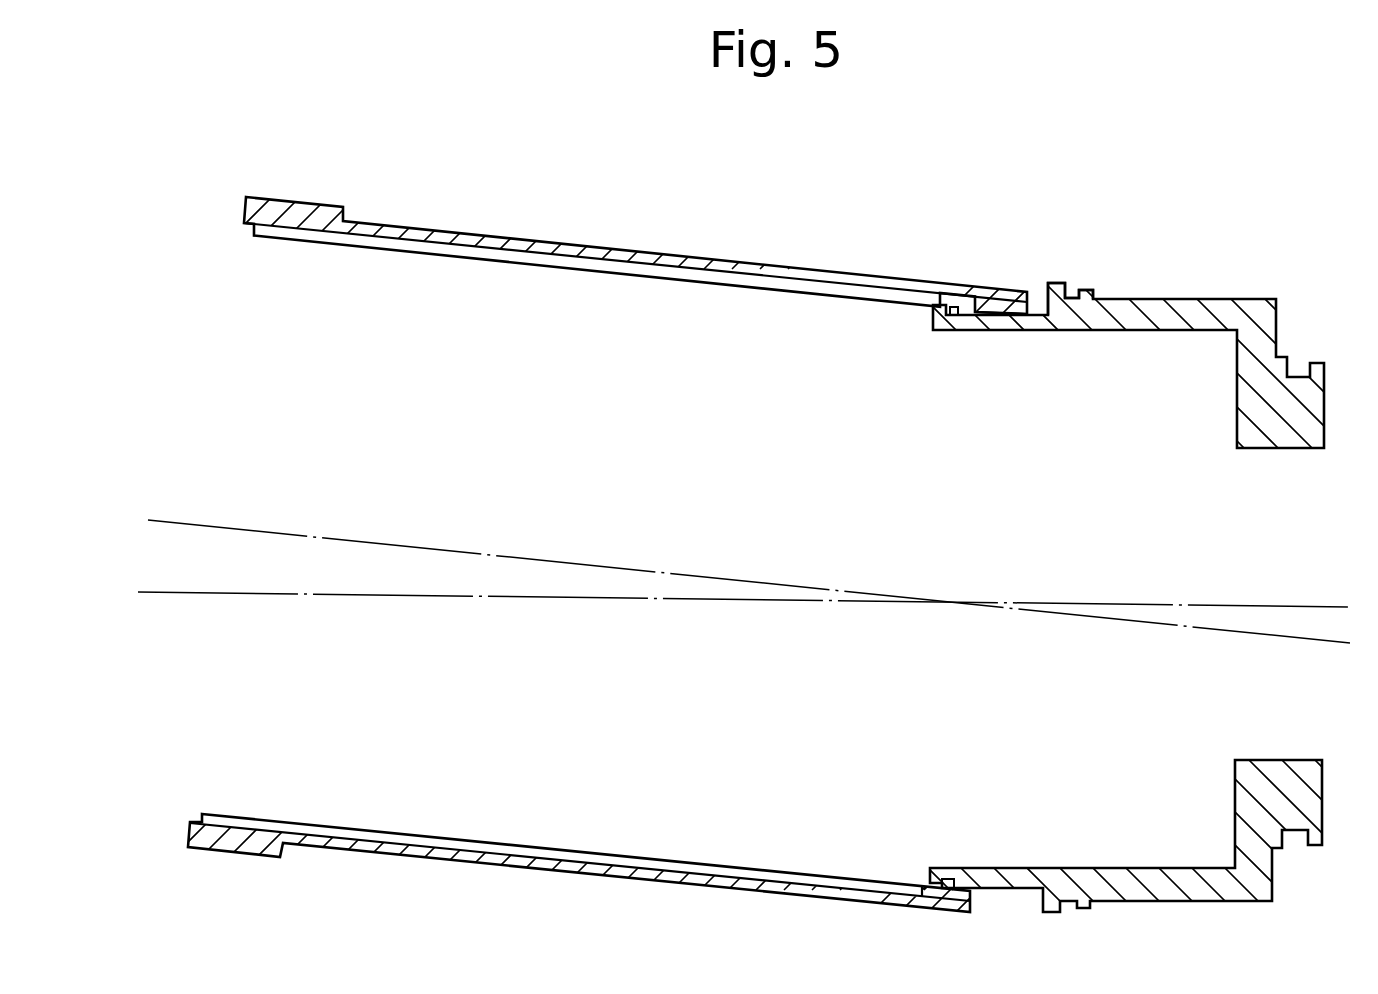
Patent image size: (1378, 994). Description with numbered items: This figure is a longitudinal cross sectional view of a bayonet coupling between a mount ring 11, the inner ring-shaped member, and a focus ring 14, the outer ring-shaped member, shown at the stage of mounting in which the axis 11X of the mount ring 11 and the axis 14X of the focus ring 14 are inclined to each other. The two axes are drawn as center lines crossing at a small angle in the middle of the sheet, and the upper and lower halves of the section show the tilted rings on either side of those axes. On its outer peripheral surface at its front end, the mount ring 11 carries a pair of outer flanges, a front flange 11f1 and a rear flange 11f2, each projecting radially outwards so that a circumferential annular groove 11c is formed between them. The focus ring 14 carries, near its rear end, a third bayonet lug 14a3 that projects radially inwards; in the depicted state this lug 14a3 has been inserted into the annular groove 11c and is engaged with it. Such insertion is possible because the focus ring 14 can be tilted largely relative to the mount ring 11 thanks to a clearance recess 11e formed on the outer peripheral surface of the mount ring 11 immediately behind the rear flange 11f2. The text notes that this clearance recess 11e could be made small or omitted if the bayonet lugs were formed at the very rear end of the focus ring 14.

The focus ring 14 is at (535, 241).
The mount ring 11 is at (1230, 300).
The annular groove 11c is at (952, 305).
The third bayonet lug 14a3 is at (1001, 306).
The clearance recess 11e is at (1038, 312).
The front flange 11f1 is at (935, 306).
The rear flange 11f2 is at (962, 316).
The axis of the focus ring 14X is at (335, 536).
The axis of the mount ring 11X is at (330, 597).